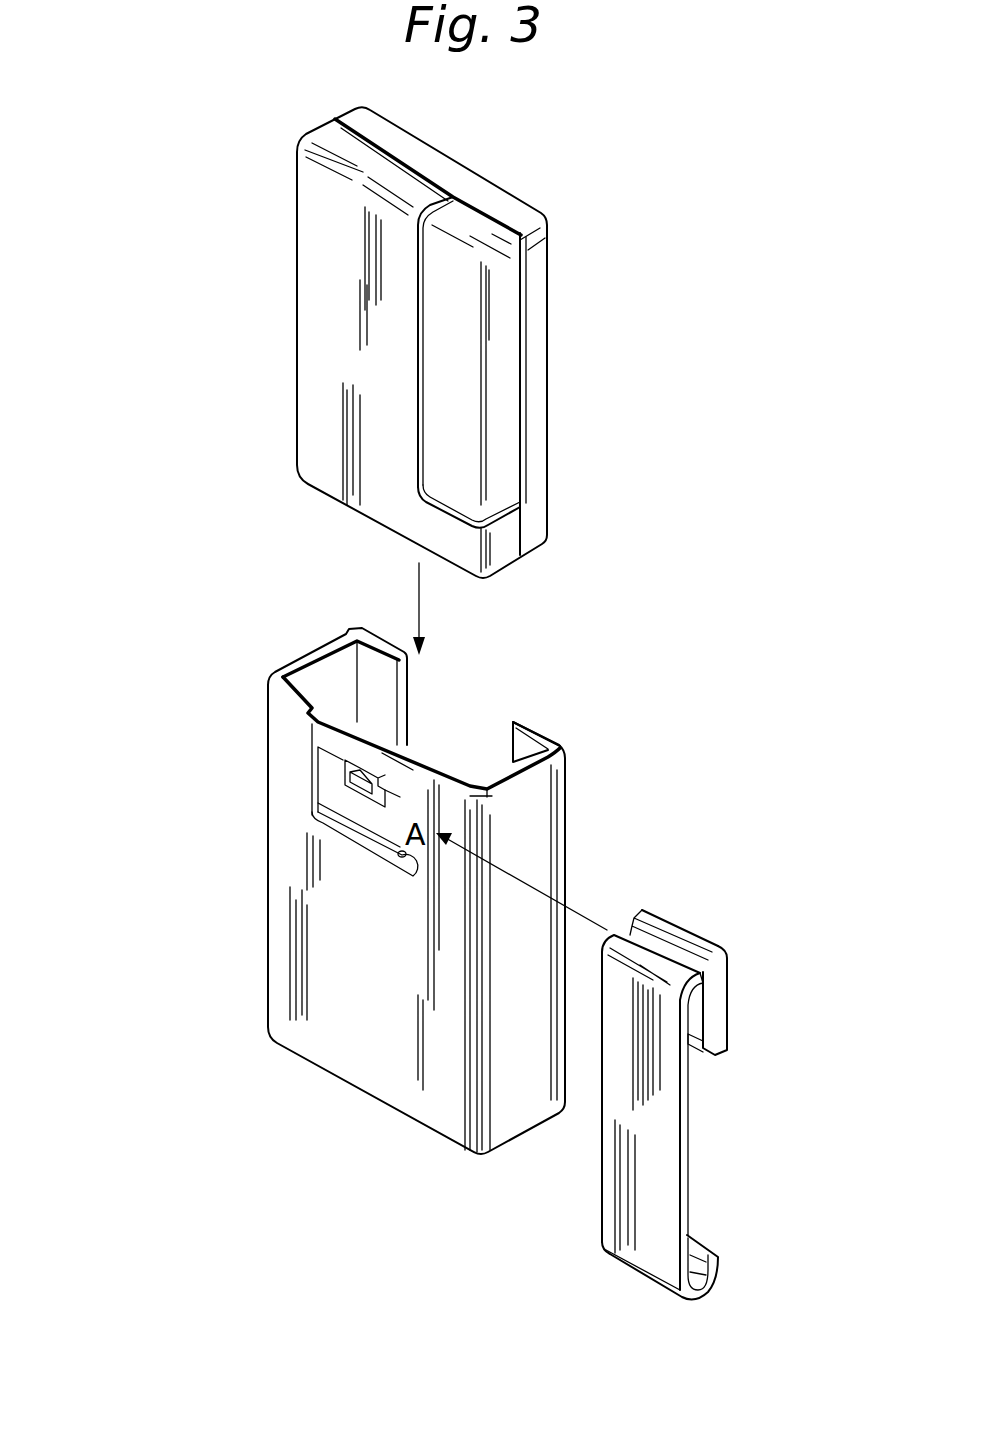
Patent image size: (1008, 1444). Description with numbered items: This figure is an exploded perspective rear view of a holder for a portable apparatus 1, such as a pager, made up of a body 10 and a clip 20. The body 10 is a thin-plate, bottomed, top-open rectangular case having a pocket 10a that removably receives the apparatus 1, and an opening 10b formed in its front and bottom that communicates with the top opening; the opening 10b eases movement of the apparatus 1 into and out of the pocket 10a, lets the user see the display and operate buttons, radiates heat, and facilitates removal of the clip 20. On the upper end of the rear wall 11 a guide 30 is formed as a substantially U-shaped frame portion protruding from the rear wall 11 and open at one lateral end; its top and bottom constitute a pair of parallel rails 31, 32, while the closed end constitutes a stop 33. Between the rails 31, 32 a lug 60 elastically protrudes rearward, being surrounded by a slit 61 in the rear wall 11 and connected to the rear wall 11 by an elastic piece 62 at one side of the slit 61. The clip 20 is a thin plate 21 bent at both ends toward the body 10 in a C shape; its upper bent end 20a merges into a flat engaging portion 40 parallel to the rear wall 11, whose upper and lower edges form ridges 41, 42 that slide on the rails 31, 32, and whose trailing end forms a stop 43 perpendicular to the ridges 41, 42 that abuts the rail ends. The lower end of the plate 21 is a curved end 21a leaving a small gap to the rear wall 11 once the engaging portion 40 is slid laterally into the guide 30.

The portable apparatus 1 is at (576, 350).
The body 10 is at (384, 891).
The pocket 10a is at (485, 779).
The opening 10b is at (515, 748).
The rear wall 11 is at (293, 917).
The clip 20 is at (676, 1087).
The upper bent end 20a is at (672, 973).
The plate 21 is at (613, 1155).
The curved end 21a is at (707, 1302).
The guide 30 is at (292, 784).
The rail 31 is at (310, 740).
The rail 32 is at (310, 850).
The stop 33 is at (310, 803).
The engaging portion 40 is at (734, 997).
The ridge 41 is at (693, 918).
The ridge 42 is at (695, 1045).
The stop 43 is at (708, 1020).
The lug 60 is at (497, 732).
The slit 61 is at (372, 768).
The elastic piece 62 is at (390, 790).